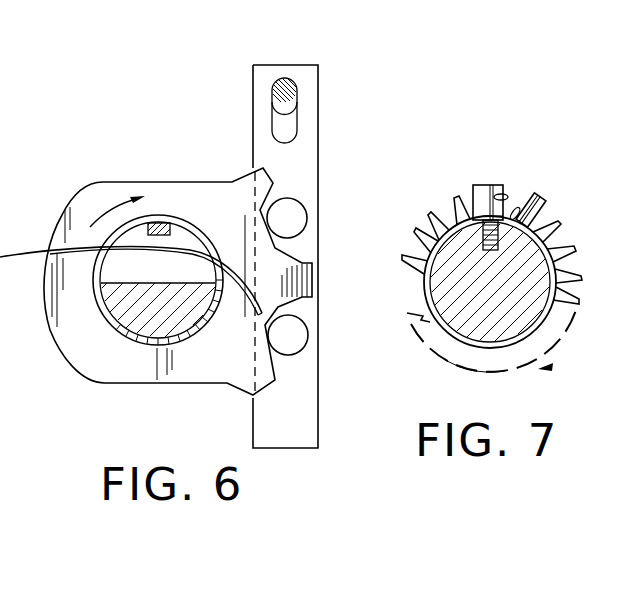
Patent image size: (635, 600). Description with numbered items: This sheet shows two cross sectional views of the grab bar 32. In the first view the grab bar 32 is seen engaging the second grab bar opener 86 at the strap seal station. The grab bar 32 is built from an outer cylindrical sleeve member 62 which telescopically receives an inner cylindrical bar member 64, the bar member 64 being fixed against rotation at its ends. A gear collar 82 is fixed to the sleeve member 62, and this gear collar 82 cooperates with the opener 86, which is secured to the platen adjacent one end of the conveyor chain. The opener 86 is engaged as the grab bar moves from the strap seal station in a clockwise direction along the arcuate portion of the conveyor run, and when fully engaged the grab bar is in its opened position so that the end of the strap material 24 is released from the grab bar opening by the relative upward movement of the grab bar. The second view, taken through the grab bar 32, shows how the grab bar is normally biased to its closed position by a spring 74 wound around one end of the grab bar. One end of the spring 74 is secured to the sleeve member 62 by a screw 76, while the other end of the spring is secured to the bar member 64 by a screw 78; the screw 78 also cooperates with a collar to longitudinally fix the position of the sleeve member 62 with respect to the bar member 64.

In FIG. 6, the strap material 24 is at (22, 252).
In FIG. 7, the grab bar 32 is at (552, 367).
In FIG. 6, the sleeve member 62 is at (200, 330).
In FIG. 7, the sleeve member 62 is at (473, 338).
In FIG. 6, the bar member 64 is at (140, 313).
In FIG. 7, the bar member 64 is at (453, 315).
In FIG. 7, the spring 74 is at (557, 233).
In FIG. 7, the screw 76 is at (532, 202).
In FIG. 7, the screw 78 is at (490, 185).
In FIG. 6, the gear collar 82 is at (163, 202).
In FIG. 6, the grab bar opener 86 is at (305, 163).